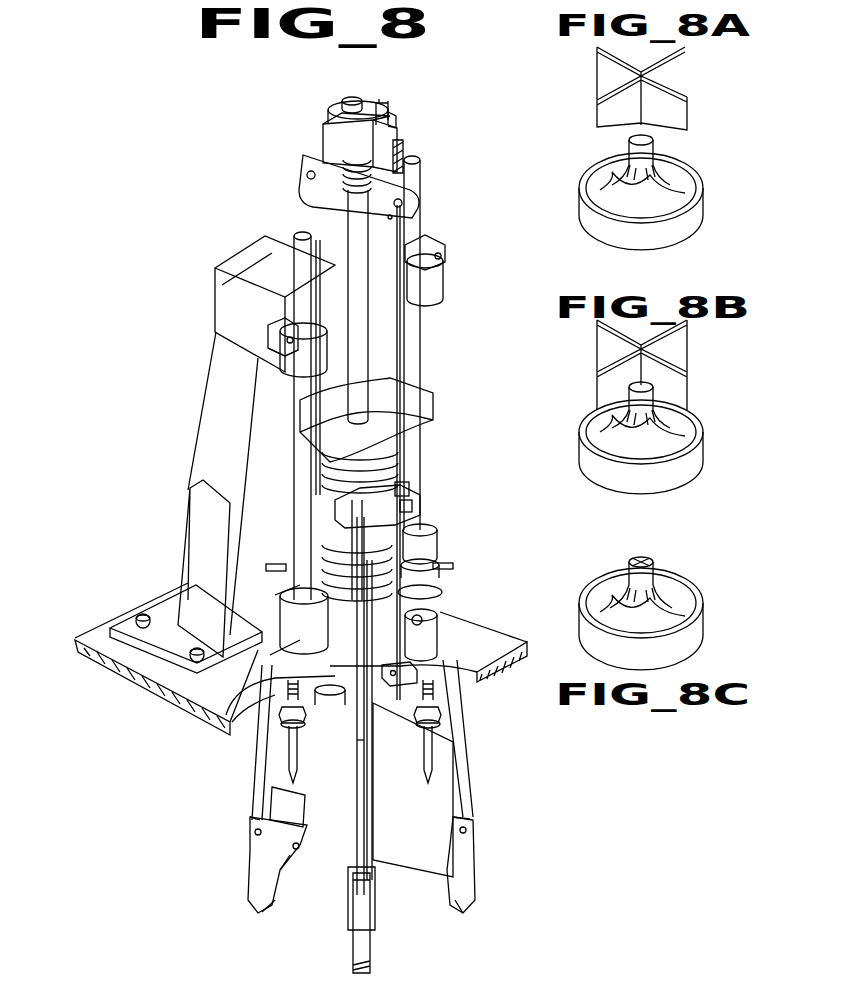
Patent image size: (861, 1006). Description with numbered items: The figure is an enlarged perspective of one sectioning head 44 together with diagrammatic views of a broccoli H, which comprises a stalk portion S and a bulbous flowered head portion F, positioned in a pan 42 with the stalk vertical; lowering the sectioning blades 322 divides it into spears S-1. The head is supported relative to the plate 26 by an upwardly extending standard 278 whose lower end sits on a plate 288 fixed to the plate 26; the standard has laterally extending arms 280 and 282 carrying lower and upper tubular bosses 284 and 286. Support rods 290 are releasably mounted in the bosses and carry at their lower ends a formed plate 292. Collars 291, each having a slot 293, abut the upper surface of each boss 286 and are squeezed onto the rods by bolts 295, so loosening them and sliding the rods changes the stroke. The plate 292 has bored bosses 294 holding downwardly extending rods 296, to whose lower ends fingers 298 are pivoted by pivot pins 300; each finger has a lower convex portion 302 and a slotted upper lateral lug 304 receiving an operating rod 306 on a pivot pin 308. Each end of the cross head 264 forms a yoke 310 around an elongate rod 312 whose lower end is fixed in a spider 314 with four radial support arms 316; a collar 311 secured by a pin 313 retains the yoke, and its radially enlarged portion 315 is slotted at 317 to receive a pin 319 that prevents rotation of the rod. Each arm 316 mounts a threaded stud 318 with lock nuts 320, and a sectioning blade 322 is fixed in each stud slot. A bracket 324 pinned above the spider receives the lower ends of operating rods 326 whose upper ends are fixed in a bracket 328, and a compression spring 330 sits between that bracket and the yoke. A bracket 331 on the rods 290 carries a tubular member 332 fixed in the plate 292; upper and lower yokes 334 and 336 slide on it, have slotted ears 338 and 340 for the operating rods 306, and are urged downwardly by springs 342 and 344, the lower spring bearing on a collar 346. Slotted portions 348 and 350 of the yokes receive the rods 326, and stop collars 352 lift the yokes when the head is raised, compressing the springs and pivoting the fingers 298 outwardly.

In FIG. 8, the sectioning head 44 is at (158, 246).
In FIG. 8, the plate 26 is at (520, 656).
In FIG. 8A, the pan 42 is at (650, 235).
In FIG. 8B, the pan 42 is at (665, 474).
In FIG. 8C, the pan 42 is at (620, 660).
In FIG. 8, the cross head 264 is at (402, 148).
In FIG. 8, the standard 278 is at (225, 408).
In FIG. 8, the arm 280 is at (205, 513).
In FIG. 8, the arm 282 is at (320, 213).
In FIG. 8, the tubular boss 284 is at (438, 540).
In FIG. 8, the tubular boss 286 is at (430, 296).
In FIG. 8, the plate 288 is at (160, 620).
In FIG. 8, the support rod 290 is at (414, 158).
In FIG. 8, the collar 291 is at (433, 244).
In FIG. 8, the formed plate 292 is at (453, 612).
In FIG. 8, the slot 293 is at (428, 236).
In FIG. 8, the bored boss 294 is at (440, 636).
In FIG. 8, the bolt 295 is at (442, 260).
In FIG. 8, the rod 296 is at (440, 710).
In FIG. 8, the finger 298 is at (255, 868).
In FIG. 8, the pivot pin 300 is at (292, 848).
In FIG. 8, the convex portion 302 is at (268, 905).
In FIG. 8, the lateral lug 304 is at (255, 845).
In FIG. 8, the operating rod 306 is at (257, 783).
In FIG. 8, the pivot pin 308 is at (245, 825).
In FIG. 8, the yoke 310 is at (322, 134).
In FIG. 8, the collar 311 is at (338, 104).
In FIG. 8, the elongate rod 312 is at (352, 97).
In FIG. 8, the pin 313 is at (335, 126).
In FIG. 8, the spider 314 is at (400, 752).
In FIG. 8, the radially enlarged portion 315 is at (391, 107).
In FIG. 8, the support arm 316 is at (232, 712).
In FIG. 8, the slot 317 is at (396, 120).
In FIG. 8, the threaded stud 318 is at (289, 745).
In FIG. 8, the pin 319 is at (378, 101).
In FIG. 8, the lock nut 320 is at (285, 712).
In FIG. 8, the sectioning blade 322 is at (433, 815).
In FIG. 8A, the sectioning blade 322 is at (595, 108).
In FIG. 8B, the sectioning blade 322 is at (612, 375).
In FIG. 8, the bracket 324 is at (418, 680).
In FIG. 8, the operating rod 326 is at (314, 222).
In FIG. 8, the bracket 328 is at (385, 196).
In FIG. 8, the compression spring 330 is at (343, 165).
In FIG. 8, the bracket 331 is at (418, 382).
In FIG. 8, the tubular member 332 is at (330, 519).
In FIG. 8, the upper yoke 334 is at (340, 490).
In FIG. 8, the lower yoke 336 is at (421, 564).
In FIG. 8, the slotted ear 338 is at (335, 506).
In FIG. 8, the slotted ear 340 is at (288, 563).
In FIG. 8, the spring 342 is at (396, 452).
In FIG. 8, the spring 344 is at (420, 593).
In FIG. 8, the collar 346 is at (398, 526).
In FIG. 8, the slotted portion 348 is at (408, 478).
In FIG. 8, the slotted portion 350 is at (277, 596).
In FIG. 8, the stop collar 352 is at (415, 498).
In FIG. 8A, the stalk portion S is at (629, 141).
In FIG. 8B, the stalk portion S is at (629, 392).
In FIG. 8C, the spear S-1 is at (628, 565).
In FIG. 8A, the broccoli H is at (670, 182).
In FIG. 8B, the broccoli H is at (674, 424).
In FIG. 8C, the broccoli H is at (672, 610).
In FIG. 8A, the flowered head portion F is at (620, 200).
In FIG. 8B, the flowered head portion F is at (620, 440).
In FIG. 8C, the flowered head portion F is at (652, 632).